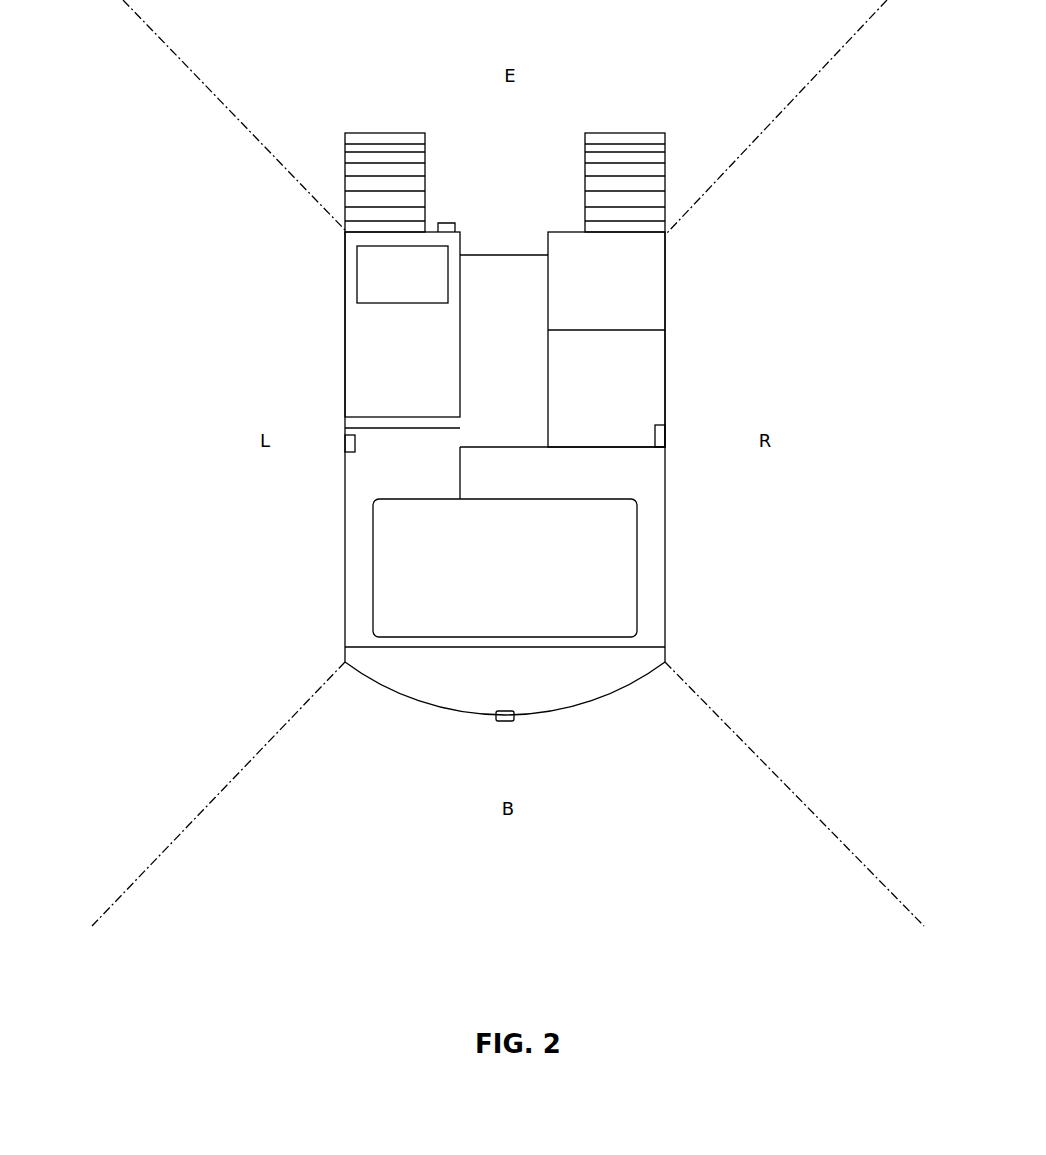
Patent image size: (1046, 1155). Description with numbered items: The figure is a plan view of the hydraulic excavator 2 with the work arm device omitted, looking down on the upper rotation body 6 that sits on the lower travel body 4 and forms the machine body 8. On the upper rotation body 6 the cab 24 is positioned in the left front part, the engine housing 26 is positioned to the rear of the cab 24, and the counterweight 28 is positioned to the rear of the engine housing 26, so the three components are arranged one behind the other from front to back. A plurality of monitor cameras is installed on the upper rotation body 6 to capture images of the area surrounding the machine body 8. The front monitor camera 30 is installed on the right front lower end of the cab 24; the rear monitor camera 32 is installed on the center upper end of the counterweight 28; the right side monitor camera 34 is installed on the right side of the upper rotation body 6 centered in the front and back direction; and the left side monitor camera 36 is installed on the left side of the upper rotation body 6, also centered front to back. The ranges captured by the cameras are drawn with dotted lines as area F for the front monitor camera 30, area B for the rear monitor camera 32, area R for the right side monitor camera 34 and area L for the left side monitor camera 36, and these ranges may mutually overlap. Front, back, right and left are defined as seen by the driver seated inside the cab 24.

The electronic device 2 is at (768, 355).
The speaker grille 4 is at (655, 182).
The upper rotation body 6 is at (668, 278).
The machine body 8 is at (659, 290).
The cab 24 is at (365, 338).
The engine housing 26 is at (365, 578).
The counterweight 28 is at (585, 692).
The front monitor camera 30 is at (447, 222).
The rear monitor camera 32 is at (508, 722).
The right side monitor camera 34 is at (667, 434).
The left side monitor camera 36 is at (344, 446).